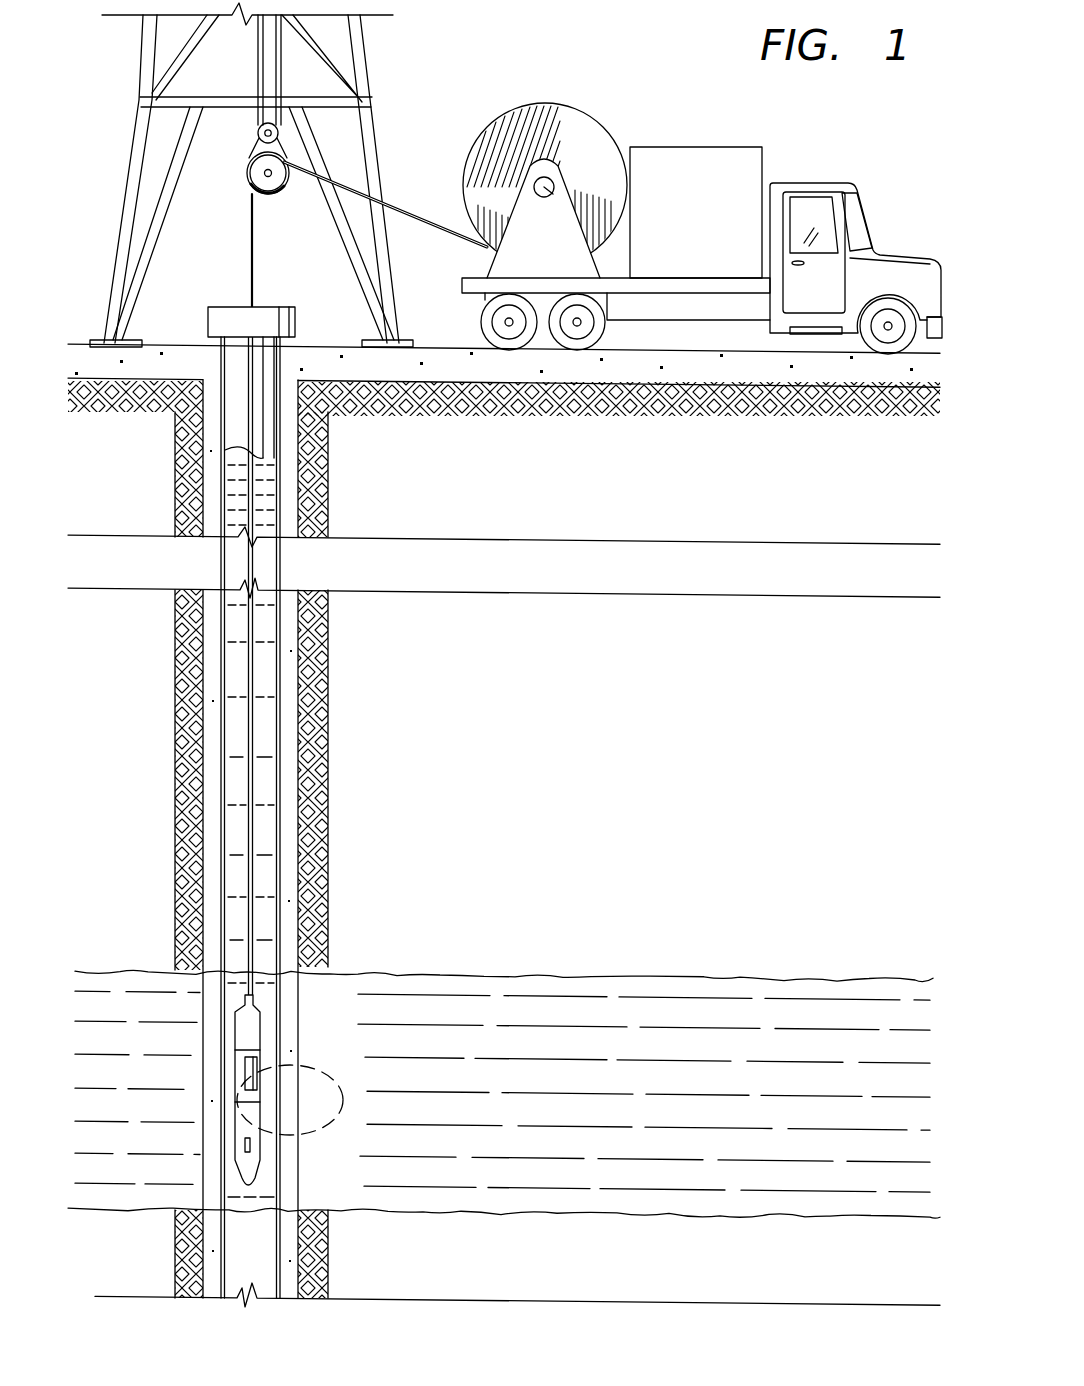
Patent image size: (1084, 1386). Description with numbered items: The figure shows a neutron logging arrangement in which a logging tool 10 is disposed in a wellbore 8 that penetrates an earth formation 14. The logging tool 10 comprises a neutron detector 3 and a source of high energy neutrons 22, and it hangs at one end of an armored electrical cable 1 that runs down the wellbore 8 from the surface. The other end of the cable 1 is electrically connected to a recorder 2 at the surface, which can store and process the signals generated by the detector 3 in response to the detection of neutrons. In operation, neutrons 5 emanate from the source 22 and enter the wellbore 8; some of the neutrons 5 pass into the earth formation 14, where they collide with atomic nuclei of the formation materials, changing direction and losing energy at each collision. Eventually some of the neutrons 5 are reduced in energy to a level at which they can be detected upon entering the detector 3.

The armored electrical cable 1 is at (407, 204).
The recorder 2 is at (689, 147).
The neutron detector 3 is at (236, 1080).
The neutrons 5 is at (333, 1106).
The wellbore 8 is at (222, 950).
The logging tool 10 is at (242, 1030).
The earth formation 14 is at (510, 1068).
The source of high energy neutrons 22 is at (245, 1143).